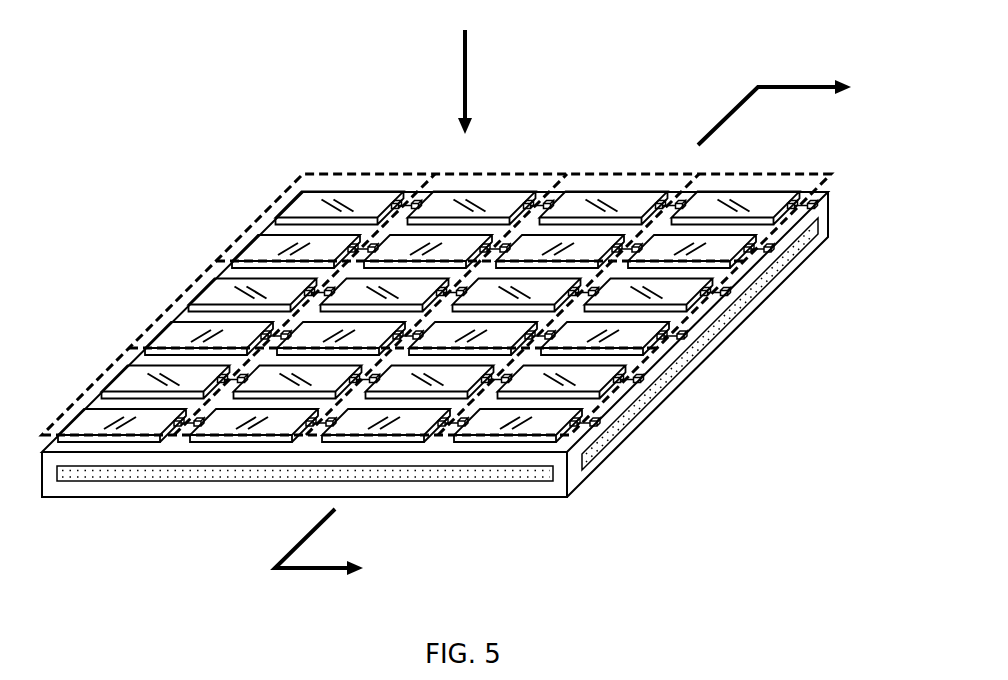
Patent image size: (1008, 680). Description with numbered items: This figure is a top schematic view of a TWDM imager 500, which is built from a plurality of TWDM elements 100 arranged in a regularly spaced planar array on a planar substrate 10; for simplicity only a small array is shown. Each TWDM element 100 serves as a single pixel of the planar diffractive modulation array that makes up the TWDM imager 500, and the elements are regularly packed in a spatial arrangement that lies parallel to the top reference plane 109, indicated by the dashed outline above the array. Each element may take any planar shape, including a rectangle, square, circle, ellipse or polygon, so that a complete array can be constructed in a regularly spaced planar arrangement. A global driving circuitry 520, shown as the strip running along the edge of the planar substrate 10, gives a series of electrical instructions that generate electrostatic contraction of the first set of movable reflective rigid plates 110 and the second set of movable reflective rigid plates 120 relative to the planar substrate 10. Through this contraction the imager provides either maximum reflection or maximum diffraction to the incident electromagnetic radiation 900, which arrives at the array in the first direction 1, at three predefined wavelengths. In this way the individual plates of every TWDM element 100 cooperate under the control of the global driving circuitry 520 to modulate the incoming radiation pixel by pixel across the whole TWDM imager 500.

The TWDM imager 500 is at (243, 66).
The incident electromagnetic radiation 900 is at (470, 68).
The first direction 1 is at (468, 70).
The top reference plane 109 is at (677, 162).
The second set of movable reflective rigid plates 120 is at (233, 281).
The first set of movable reflective rigid plates 110 is at (190, 326).
The TWDM element 100 is at (205, 258).
The global driving circuitry 520 is at (193, 480).
The planar substrate 10 is at (578, 487).